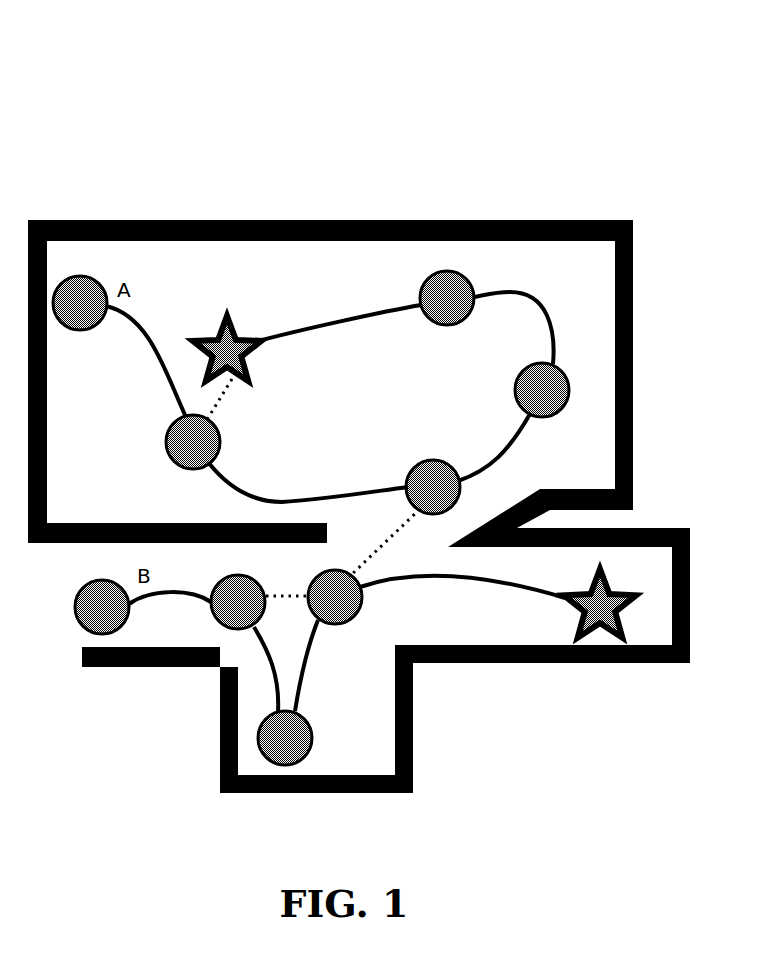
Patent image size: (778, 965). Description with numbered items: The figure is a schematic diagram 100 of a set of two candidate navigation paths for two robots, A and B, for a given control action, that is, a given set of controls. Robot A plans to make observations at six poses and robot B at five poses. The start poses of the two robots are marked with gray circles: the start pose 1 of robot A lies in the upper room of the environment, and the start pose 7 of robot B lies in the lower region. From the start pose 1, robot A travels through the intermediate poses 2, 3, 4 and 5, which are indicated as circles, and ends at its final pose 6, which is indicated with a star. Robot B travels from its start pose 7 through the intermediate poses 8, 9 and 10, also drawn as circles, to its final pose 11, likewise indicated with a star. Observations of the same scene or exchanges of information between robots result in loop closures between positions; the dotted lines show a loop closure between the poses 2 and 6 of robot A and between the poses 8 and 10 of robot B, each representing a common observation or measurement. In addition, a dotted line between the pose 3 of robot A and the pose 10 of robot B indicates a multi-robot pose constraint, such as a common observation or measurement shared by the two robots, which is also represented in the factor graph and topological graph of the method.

The map of environment with rooms and walls 100 is at (115, 99).
The start pose of robot A 1 is at (80, 303).
The intermediate pose of robot A 2 is at (193, 442).
The intermediate pose of robot A 3 is at (433, 487).
The intermediate pose of robot A 4 is at (542, 390).
The intermediate pose of robot A 5 is at (447, 298).
The final pose of robot A 6 is at (227, 348).
The start pose of robot B 7 is at (102, 607).
The intermediate pose of robot B 8 is at (238, 602).
The intermediate pose of robot B 9 is at (285, 738).
The intermediate pose of robot B 10 is at (335, 597).
The final pose of robot B 11 is at (600, 603).